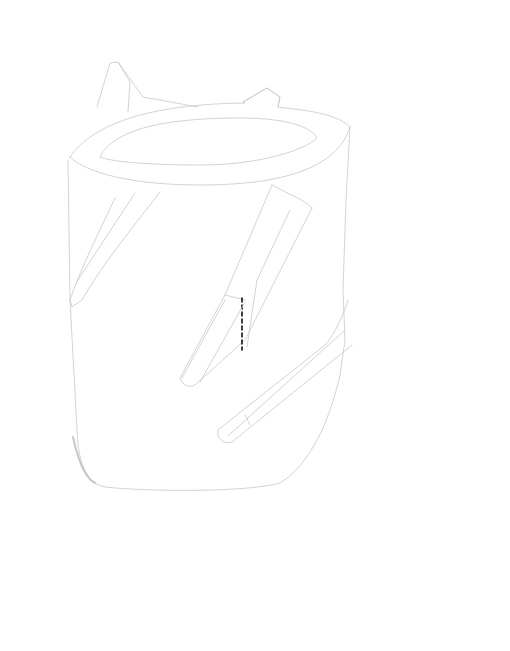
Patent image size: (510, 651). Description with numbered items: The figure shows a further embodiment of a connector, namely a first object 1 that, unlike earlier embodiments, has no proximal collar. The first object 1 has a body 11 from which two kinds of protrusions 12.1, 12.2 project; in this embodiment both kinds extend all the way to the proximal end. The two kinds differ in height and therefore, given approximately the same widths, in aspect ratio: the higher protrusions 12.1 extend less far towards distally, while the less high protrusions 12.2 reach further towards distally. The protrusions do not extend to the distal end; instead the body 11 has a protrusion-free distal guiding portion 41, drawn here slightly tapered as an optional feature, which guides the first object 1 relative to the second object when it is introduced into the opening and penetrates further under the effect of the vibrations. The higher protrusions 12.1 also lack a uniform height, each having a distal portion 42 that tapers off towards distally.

The first object 1 is at (362, 262).
The body 11 is at (156, 302).
The protrusions 12.1 is at (123, 90).
The protrusions 12.2 is at (268, 90).
The distal guiding portion 41 is at (70, 438).
The distal portion 42 is at (220, 352).